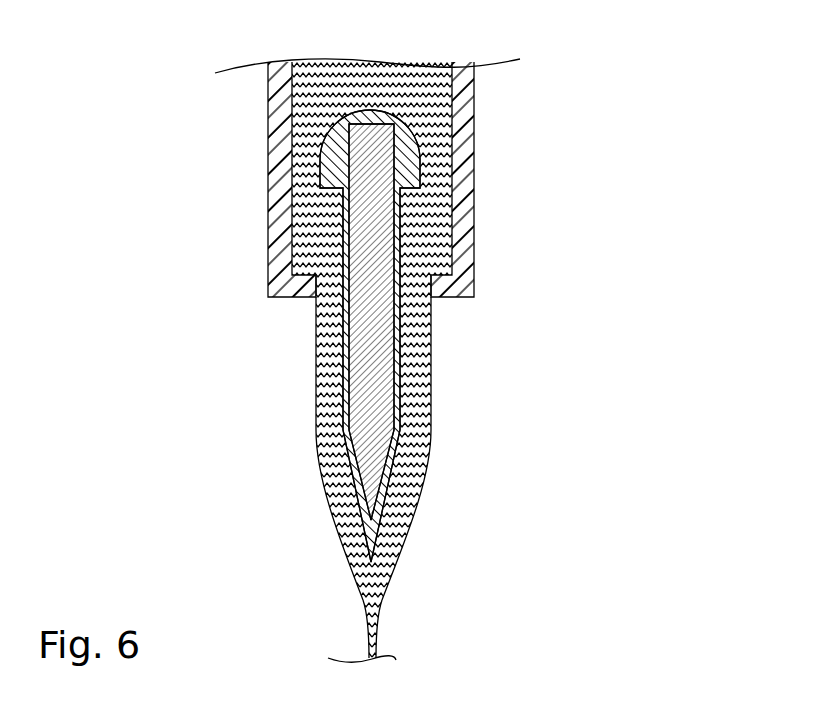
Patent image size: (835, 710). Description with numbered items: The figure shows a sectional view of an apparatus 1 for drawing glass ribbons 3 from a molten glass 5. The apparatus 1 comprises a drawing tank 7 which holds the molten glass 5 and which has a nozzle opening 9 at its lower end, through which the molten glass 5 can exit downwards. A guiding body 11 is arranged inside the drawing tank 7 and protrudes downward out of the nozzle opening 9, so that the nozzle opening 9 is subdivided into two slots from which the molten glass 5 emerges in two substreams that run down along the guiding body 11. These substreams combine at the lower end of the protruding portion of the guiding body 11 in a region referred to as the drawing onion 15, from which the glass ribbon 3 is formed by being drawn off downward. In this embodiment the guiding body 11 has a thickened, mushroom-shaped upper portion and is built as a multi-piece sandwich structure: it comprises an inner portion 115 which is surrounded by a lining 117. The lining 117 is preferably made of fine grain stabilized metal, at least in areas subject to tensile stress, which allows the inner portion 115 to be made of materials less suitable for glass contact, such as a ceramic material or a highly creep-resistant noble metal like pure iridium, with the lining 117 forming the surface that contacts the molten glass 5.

The apparatus 1 is at (556, 137).
The glass ribbon 3 is at (378, 650).
The molten glass 5 is at (453, 243).
The drawing tank 7 is at (474, 282).
The nozzle opening 9 is at (432, 302).
The guiding body 11 is at (427, 475).
The drawing onion 15 is at (383, 580).
The inner portion 115 is at (346, 428).
The lining 117 is at (330, 376).